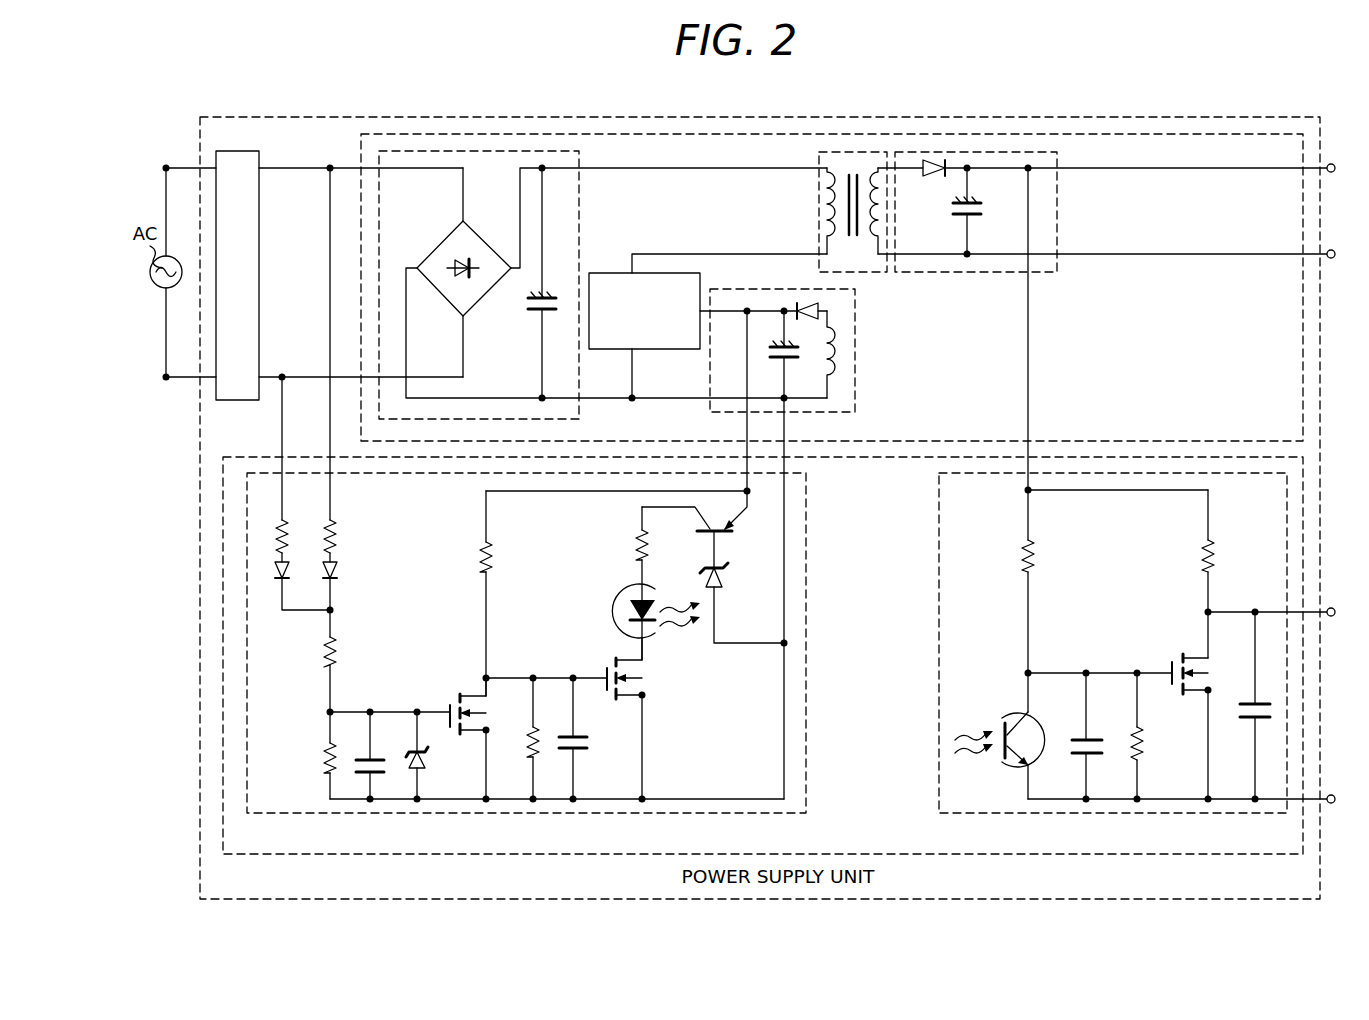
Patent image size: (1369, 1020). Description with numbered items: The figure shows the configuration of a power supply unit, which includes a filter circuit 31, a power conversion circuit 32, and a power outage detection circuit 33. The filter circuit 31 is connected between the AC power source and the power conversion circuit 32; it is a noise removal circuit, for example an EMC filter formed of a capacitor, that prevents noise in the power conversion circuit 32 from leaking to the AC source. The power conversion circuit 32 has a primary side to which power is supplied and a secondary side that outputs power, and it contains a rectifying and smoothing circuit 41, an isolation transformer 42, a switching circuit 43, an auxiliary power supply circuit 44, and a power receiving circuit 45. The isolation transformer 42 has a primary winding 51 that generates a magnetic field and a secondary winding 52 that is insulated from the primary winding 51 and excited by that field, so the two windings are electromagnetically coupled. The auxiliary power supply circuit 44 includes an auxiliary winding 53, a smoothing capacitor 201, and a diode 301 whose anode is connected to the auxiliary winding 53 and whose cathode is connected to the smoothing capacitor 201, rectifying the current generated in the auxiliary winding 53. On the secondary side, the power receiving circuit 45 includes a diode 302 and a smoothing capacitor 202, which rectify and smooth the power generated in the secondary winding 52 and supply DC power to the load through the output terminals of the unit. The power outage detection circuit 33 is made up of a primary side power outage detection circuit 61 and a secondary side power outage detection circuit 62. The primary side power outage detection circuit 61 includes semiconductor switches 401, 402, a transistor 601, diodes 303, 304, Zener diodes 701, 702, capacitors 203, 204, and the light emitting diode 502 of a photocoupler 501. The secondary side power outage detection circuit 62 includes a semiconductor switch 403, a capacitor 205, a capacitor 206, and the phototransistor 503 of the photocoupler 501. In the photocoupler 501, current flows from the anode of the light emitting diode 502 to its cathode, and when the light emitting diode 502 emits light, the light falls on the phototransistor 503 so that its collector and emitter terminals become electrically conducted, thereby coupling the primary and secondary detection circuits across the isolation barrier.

The filter circuit 31 is at (238, 151).
The power conversion circuit 32 is at (600, 134).
The power outage detection circuit 33 is at (223, 625).
The rectifying and smoothing circuit 41 is at (492, 151).
The isolation transformer 42 is at (608, 169).
The switching circuit 43 is at (614, 273).
The auxiliary power supply circuit 44 is at (824, 335).
The power receiving circuit 45 is at (1104, 169).
The primary winding 51 is at (827, 205).
The secondary winding 52 is at (880, 205).
The auxiliary winding 53 is at (842, 351).
The primary side power outage detection circuit 61 is at (247, 680).
The secondary side power outage detection circuit 62 is at (939, 532).
The smoothing capacitor 201 is at (780, 347).
The smoothing capacitor 202 is at (974, 205).
The capacitor 203 is at (379, 758).
The capacitor 204 is at (586, 741).
The capacitor 205 is at (1097, 740).
The capacitor 206 is at (1264, 702).
The diode 301 is at (806, 301).
The diode 302 is at (936, 157).
The diode 303 is at (344, 536).
The diode 304 is at (294, 536).
The semiconductor switch 401 is at (446, 705).
The semiconductor switch 402 is at (601, 670).
The semiconductor switch 403 is at (1168, 668).
The photocoupler 501 is at (623, 590).
The light emitting diode 502 is at (672, 629).
The phototransistor 503 is at (985, 734).
The transistor 601 is at (695, 536).
The Zener diode 701 is at (425, 762).
The Zener diode 702 is at (724, 576).